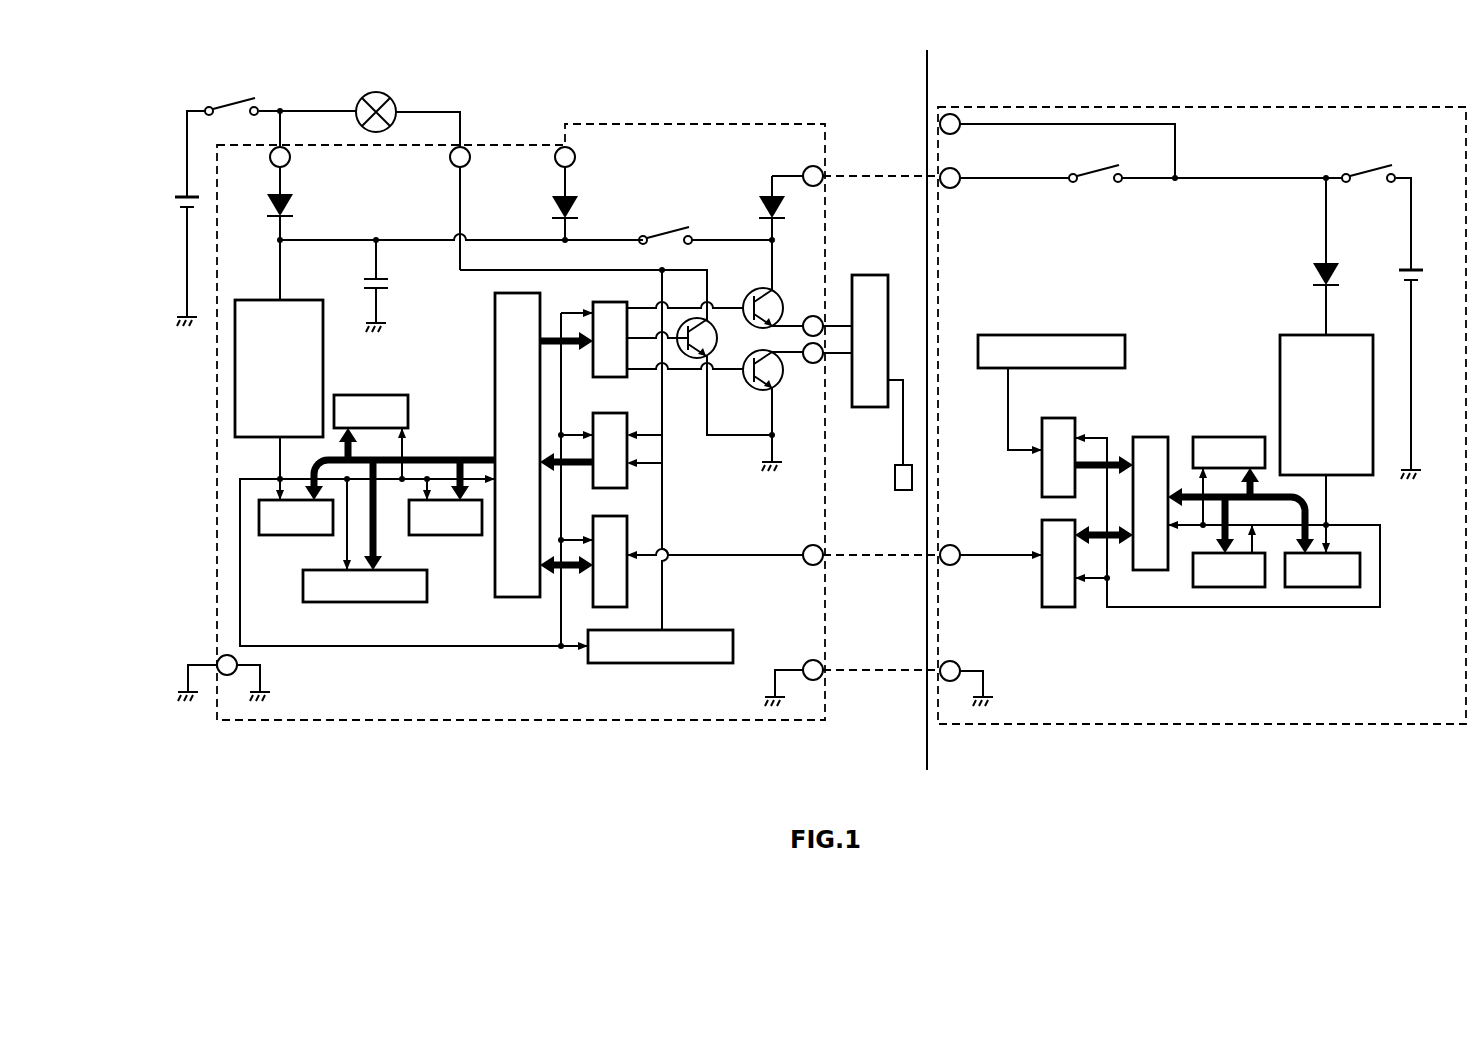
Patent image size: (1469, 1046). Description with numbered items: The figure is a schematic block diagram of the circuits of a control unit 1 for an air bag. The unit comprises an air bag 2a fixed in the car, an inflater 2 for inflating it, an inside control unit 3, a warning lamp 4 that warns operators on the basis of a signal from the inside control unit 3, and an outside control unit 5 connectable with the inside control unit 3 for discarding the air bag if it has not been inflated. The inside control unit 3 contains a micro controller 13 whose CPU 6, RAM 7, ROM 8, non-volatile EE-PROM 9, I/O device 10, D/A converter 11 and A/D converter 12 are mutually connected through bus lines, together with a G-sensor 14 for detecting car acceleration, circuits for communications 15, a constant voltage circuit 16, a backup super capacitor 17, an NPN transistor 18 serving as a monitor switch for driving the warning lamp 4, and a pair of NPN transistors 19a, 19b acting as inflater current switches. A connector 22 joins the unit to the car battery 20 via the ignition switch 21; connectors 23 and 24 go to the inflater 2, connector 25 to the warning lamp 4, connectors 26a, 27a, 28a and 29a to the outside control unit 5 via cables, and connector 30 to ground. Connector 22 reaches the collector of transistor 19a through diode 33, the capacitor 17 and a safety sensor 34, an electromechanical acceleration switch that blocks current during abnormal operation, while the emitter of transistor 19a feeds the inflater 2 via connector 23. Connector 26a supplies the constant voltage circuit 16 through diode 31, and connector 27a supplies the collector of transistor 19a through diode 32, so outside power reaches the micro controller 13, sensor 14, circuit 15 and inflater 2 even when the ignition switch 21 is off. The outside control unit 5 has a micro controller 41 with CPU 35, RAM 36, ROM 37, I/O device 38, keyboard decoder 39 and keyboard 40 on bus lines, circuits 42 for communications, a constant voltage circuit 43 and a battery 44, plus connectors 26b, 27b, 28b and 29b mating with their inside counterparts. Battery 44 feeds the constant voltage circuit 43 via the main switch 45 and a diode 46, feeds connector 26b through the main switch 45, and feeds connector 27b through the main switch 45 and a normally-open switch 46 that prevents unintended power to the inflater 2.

The control unit for an air bag 1 is at (886, 43).
The inflater 2 is at (870, 407).
The air bag 2a is at (895, 485).
The inside control unit 3 is at (665, 124).
The warning lamp 4 is at (378, 92).
The outside control unit 5 is at (1152, 107).
The CPU 6 is at (398, 395).
The RAM 7 is at (464, 535).
The ROM 8 is at (259, 520).
The EE-PROM 9 is at (427, 598).
The I/O device 10 is at (495, 326).
The D/A converter 11 is at (592, 302).
The A/D converter 12 is at (628, 470).
The micro controller 13 is at (466, 626).
The G-sensor 14 is at (698, 630).
The circuits for communications 15 is at (628, 520).
The constant voltage circuit 16 is at (323, 350).
The backup super capacitor 17 is at (390, 288).
The NPN transistor 18 is at (694, 360).
The NPN transistor 19a is at (750, 292).
The NPN transistor 19b is at (756, 388).
The battery 20 is at (184, 205).
The ignition switch 21 is at (245, 99).
The connector 22 is at (292, 162).
The connector 23 is at (812, 316).
The connector 24 is at (812, 363).
The connector 25 is at (470, 160).
The connector 26a is at (575, 160).
The connector 26b is at (960, 130).
The connector 27a is at (820, 186).
The connector 27b is at (960, 184).
The connector 28a is at (806, 547).
The connector 28b is at (958, 548).
The connector 29a is at (806, 662).
The connector 29b is at (972, 652).
The connector 30 is at (220, 658).
The diode 31 is at (578, 205).
The diode 32 is at (768, 198).
The diode 33 is at (293, 205).
The safety sensor 34 is at (676, 230).
The CPU 35 is at (1226, 437).
The RAM 36 is at (1228, 587).
The ROM 37 is at (1312, 587).
The I/O device 38 is at (1150, 437).
The keyboard decoder 39 is at (1042, 476).
The keyboard 40 is at (1048, 335).
The micro controller 41 is at (1186, 629).
The circuits for communications 42 is at (1056, 607).
The constant voltage circuit 43 is at (1280, 340).
The battery 44 is at (1398, 278).
The main switch 45 is at (1372, 176).
The diode and normally-open switch 46 is at (1107, 186).